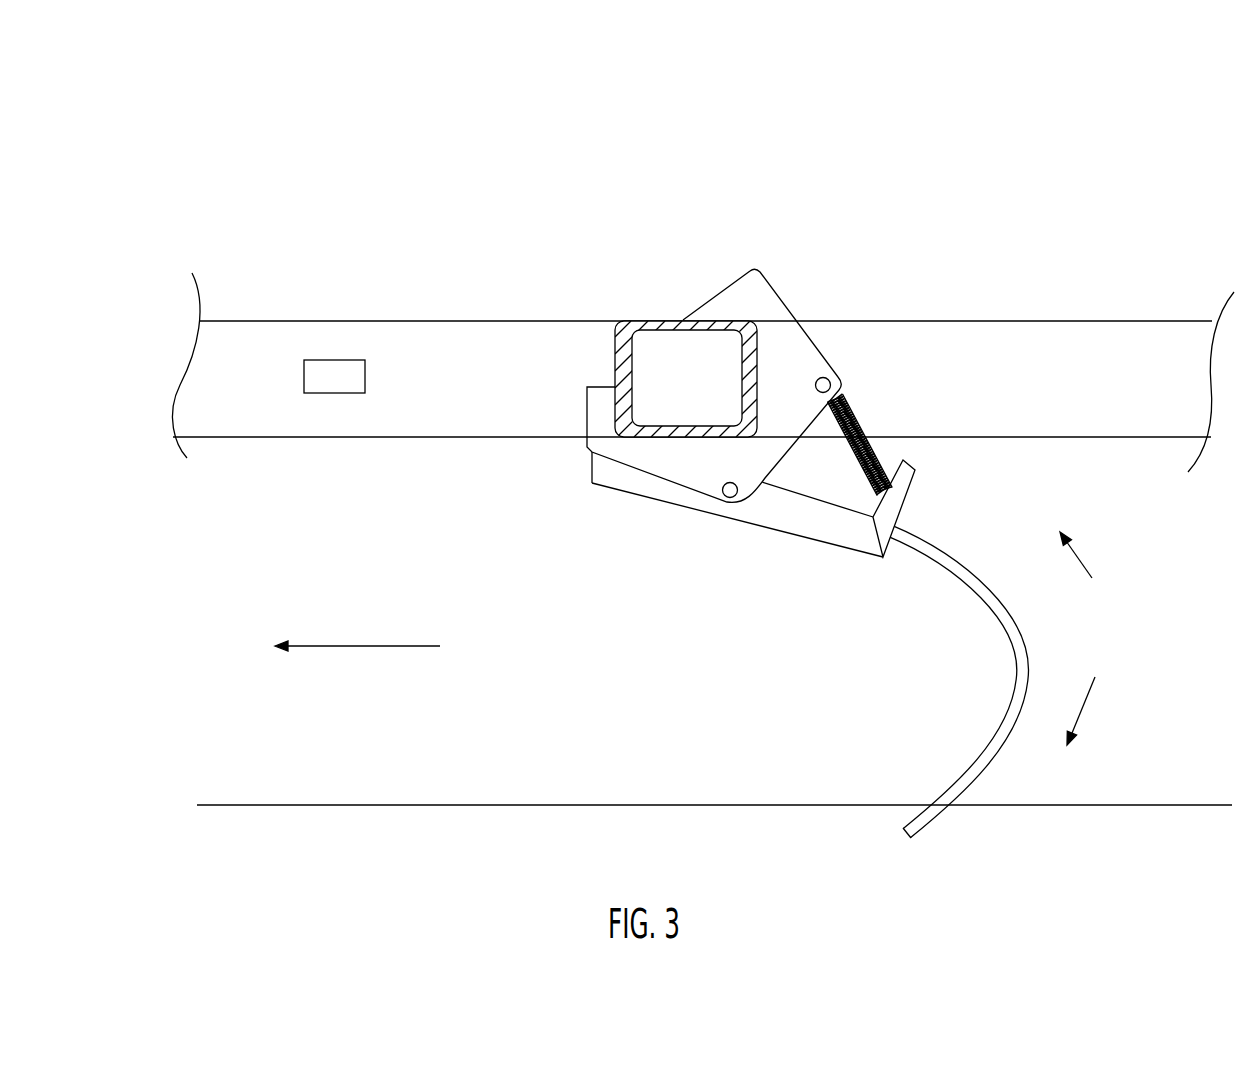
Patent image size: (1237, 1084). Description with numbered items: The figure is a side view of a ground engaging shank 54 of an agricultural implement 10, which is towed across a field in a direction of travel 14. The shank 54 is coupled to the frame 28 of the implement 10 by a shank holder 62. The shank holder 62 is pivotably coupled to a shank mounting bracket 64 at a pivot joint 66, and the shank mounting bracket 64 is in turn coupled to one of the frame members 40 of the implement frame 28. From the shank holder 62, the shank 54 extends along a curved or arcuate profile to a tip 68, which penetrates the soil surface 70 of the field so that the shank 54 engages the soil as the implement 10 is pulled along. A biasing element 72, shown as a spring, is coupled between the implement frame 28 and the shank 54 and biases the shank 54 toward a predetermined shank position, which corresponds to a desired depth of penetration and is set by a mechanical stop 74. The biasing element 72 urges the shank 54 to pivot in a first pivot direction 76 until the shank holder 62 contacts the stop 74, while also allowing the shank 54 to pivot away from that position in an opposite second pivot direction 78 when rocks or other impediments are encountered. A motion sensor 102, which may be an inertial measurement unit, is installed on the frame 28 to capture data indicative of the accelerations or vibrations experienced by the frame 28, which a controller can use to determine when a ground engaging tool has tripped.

The implement 10 is at (1132, 142).
The direction of travel 14 is at (353, 648).
The frame 28 is at (288, 272).
The frame member 40 is at (652, 320).
The ground engaging shank 54 is at (995, 622).
The shank holder 62 is at (822, 540).
The shank mounting bracket 64 is at (783, 293).
The pivot joint 66 is at (728, 497).
The tip 68 is at (902, 839).
The soil surface 70 is at (253, 805).
The biasing element 72 is at (857, 415).
The mechanical stop 74 is at (590, 458).
The first pivot direction 76 is at (1083, 705).
The second pivot direction 78 is at (1078, 555).
The motion sensor 102 is at (333, 377).